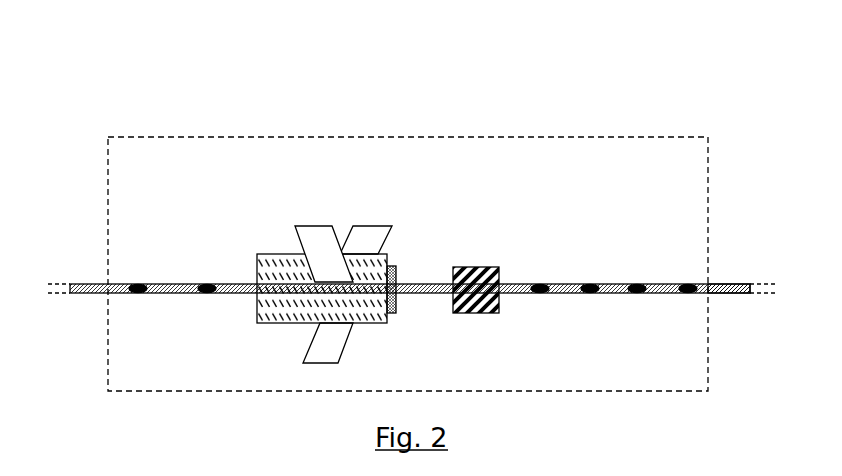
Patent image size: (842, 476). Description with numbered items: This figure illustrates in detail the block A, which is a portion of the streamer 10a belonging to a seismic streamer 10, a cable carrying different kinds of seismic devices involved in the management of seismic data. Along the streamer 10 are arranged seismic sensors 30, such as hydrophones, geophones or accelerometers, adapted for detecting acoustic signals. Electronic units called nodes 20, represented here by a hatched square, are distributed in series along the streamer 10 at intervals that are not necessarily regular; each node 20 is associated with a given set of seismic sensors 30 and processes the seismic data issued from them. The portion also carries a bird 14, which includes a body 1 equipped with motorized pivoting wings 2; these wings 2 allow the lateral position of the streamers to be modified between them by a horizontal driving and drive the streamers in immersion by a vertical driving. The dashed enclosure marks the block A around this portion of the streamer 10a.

The block A is at (570, 137).
The seismic streamer 10 is at (88, 280).
The portion of the streamer 10a is at (718, 283).
The body 1 is at (264, 317).
The motorized pivoting wings 2 is at (312, 236).
The bird 14 is at (343, 216).
The node 20 is at (470, 295).
The seismic sensors 30 is at (637, 283).